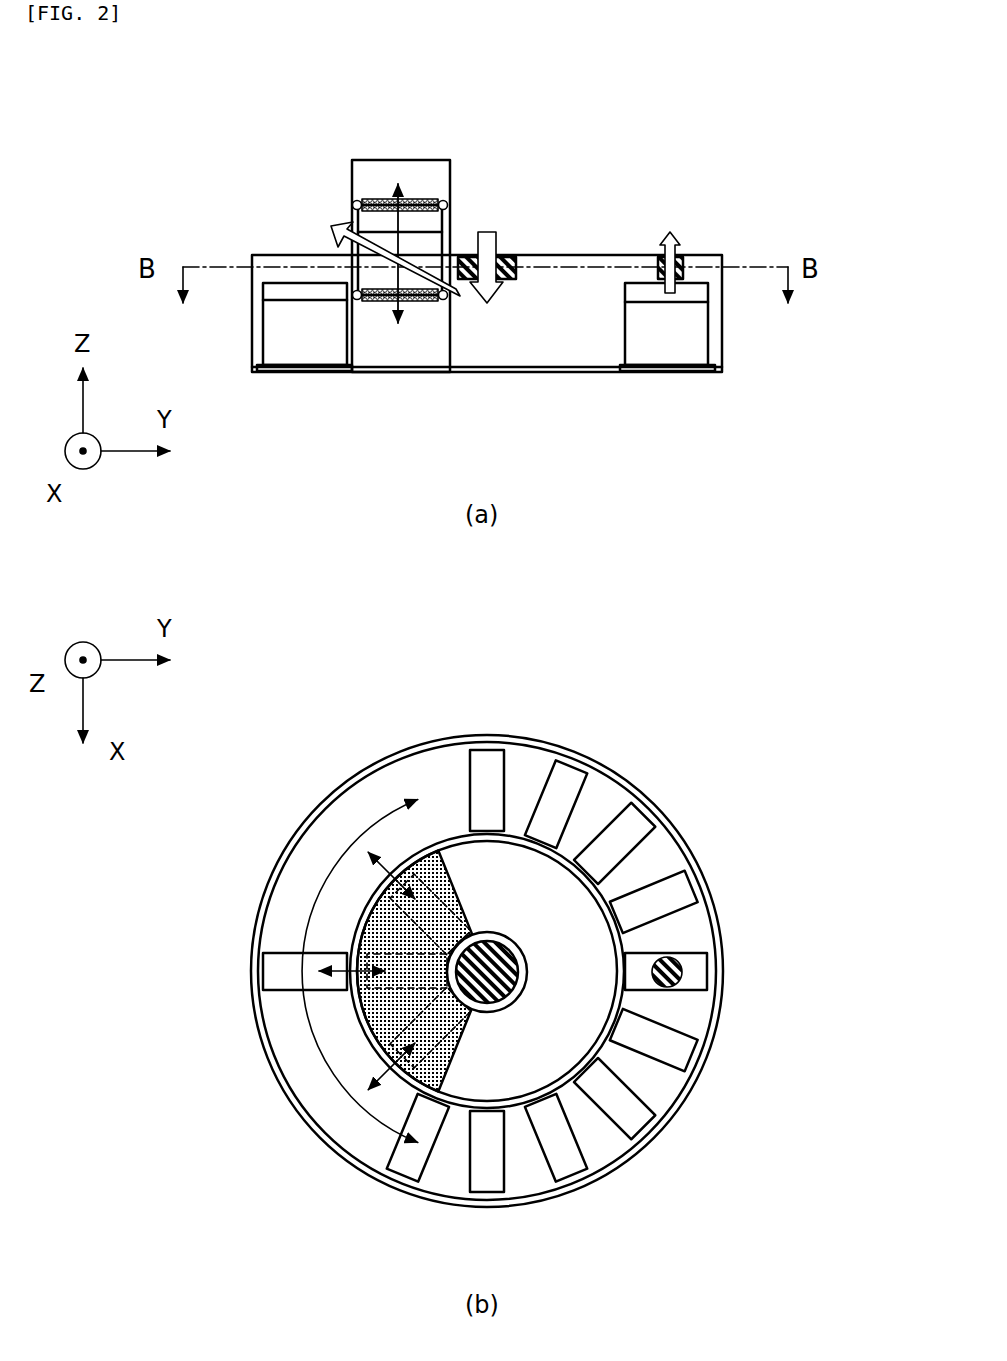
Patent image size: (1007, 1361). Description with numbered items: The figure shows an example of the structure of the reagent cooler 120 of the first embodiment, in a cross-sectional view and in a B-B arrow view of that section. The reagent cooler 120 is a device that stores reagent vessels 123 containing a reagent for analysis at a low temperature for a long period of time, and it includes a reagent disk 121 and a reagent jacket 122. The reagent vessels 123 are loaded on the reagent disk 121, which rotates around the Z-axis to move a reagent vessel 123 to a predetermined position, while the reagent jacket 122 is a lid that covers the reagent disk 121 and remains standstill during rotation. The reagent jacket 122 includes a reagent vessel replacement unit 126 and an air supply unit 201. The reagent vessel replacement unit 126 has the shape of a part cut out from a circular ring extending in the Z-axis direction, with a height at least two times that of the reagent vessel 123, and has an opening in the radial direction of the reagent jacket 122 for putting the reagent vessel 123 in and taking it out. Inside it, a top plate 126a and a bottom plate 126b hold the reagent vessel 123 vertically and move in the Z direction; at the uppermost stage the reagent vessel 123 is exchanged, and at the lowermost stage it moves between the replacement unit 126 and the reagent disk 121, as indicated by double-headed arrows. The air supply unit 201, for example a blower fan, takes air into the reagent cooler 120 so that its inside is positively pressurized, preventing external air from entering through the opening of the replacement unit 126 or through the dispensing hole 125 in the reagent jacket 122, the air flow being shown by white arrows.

The reagent cooler 120 is at (673, 160).
The reagent disk 121 is at (510, 375).
The reagent jacket 122 is at (300, 253).
The reagent vessel 123 is at (285, 330).
The dispensing hole 125 is at (694, 257).
The reagent vessel replacement unit 126 is at (350, 178).
The top plate 126a is at (423, 200).
The bottom plate 126b is at (423, 302).
The air supply unit 201 is at (510, 257).